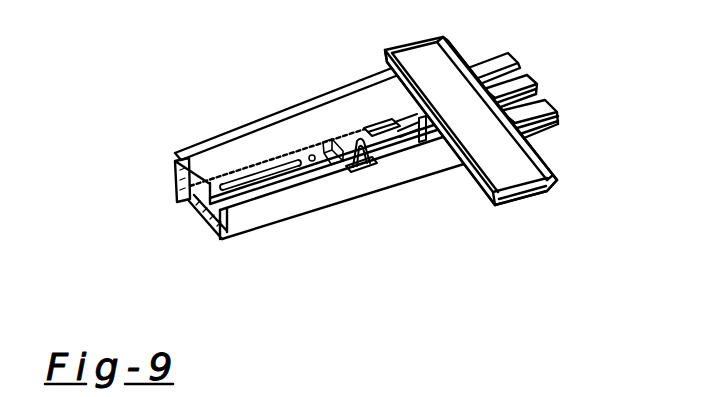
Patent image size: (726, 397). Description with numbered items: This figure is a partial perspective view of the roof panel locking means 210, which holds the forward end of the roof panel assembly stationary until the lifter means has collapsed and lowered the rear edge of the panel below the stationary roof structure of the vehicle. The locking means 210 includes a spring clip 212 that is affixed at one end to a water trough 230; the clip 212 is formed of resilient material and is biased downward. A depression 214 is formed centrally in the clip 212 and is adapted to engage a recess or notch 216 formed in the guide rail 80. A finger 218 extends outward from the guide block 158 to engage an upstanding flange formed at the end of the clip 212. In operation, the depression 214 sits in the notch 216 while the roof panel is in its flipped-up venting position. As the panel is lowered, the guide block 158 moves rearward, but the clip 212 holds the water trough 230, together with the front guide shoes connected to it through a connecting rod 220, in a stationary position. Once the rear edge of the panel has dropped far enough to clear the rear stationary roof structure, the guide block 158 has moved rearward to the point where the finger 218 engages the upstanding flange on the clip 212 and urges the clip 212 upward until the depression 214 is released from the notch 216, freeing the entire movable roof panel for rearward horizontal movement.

The guide rail 80 is at (186, 153).
The guide block 158 is at (175, 189).
The connecting rod 220 is at (237, 150).
The locking means 210 is at (403, 188).
The spring clip 212 is at (381, 114).
The notch 216 is at (367, 165).
The finger 218 is at (353, 168).
The depression 214 is at (452, 152).
The water trough 230 is at (526, 203).